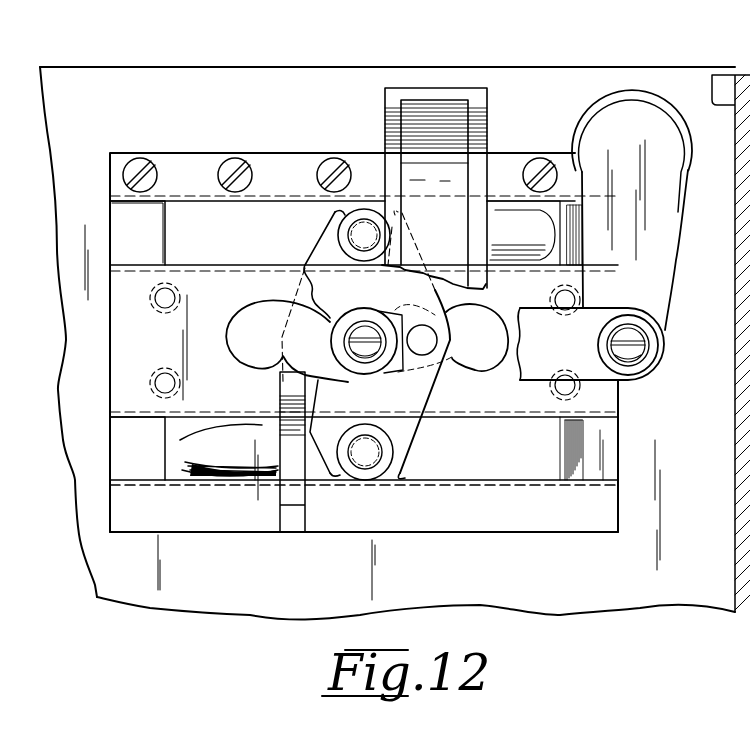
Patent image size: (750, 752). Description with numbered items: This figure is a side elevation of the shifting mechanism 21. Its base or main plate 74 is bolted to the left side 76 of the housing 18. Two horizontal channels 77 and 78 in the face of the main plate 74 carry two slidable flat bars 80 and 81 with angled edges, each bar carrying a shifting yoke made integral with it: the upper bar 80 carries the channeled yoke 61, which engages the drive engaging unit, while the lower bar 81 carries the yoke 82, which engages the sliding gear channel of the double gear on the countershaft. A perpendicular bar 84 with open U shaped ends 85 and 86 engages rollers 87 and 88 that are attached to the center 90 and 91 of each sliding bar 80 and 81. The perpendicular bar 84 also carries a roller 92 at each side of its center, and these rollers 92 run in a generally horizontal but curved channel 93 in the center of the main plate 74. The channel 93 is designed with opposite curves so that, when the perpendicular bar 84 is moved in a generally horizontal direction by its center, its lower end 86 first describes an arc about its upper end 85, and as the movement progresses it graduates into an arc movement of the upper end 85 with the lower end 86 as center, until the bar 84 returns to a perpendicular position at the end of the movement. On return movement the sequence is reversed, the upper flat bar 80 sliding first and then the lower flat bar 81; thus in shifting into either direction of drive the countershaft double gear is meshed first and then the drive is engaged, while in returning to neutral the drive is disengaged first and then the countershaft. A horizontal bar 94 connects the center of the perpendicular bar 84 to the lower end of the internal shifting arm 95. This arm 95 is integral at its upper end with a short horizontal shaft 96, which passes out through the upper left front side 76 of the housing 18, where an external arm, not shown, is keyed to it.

The housing 18 is at (271, 64).
The shifting mechanism 21 is at (160, 150).
The channeled yoke 61 is at (385, 120).
The main plate 74 is at (215, 533).
The left side of the housing 76 is at (227, 613).
The horizontal channel 77 is at (118, 212).
The horizontal channel 78 is at (118, 448).
The upper bar 80 is at (175, 240).
The lower bar 81 is at (178, 458).
The yoke 82 is at (305, 505).
The perpendicular bar 84 is at (428, 399).
The upper end 85 is at (335, 212).
The lower end 86 is at (405, 478).
The roller 87 is at (362, 208).
The roller 88 is at (393, 454).
The center of sliding bar 90 is at (373, 243).
The center of sliding bar 91 is at (373, 460).
The roller 92 is at (416, 300).
The curved channel 93 is at (455, 366).
The horizontal bar 94 is at (357, 312).
The internal shifting arm 95 is at (670, 262).
The short horizontal shaft 96 is at (638, 98).